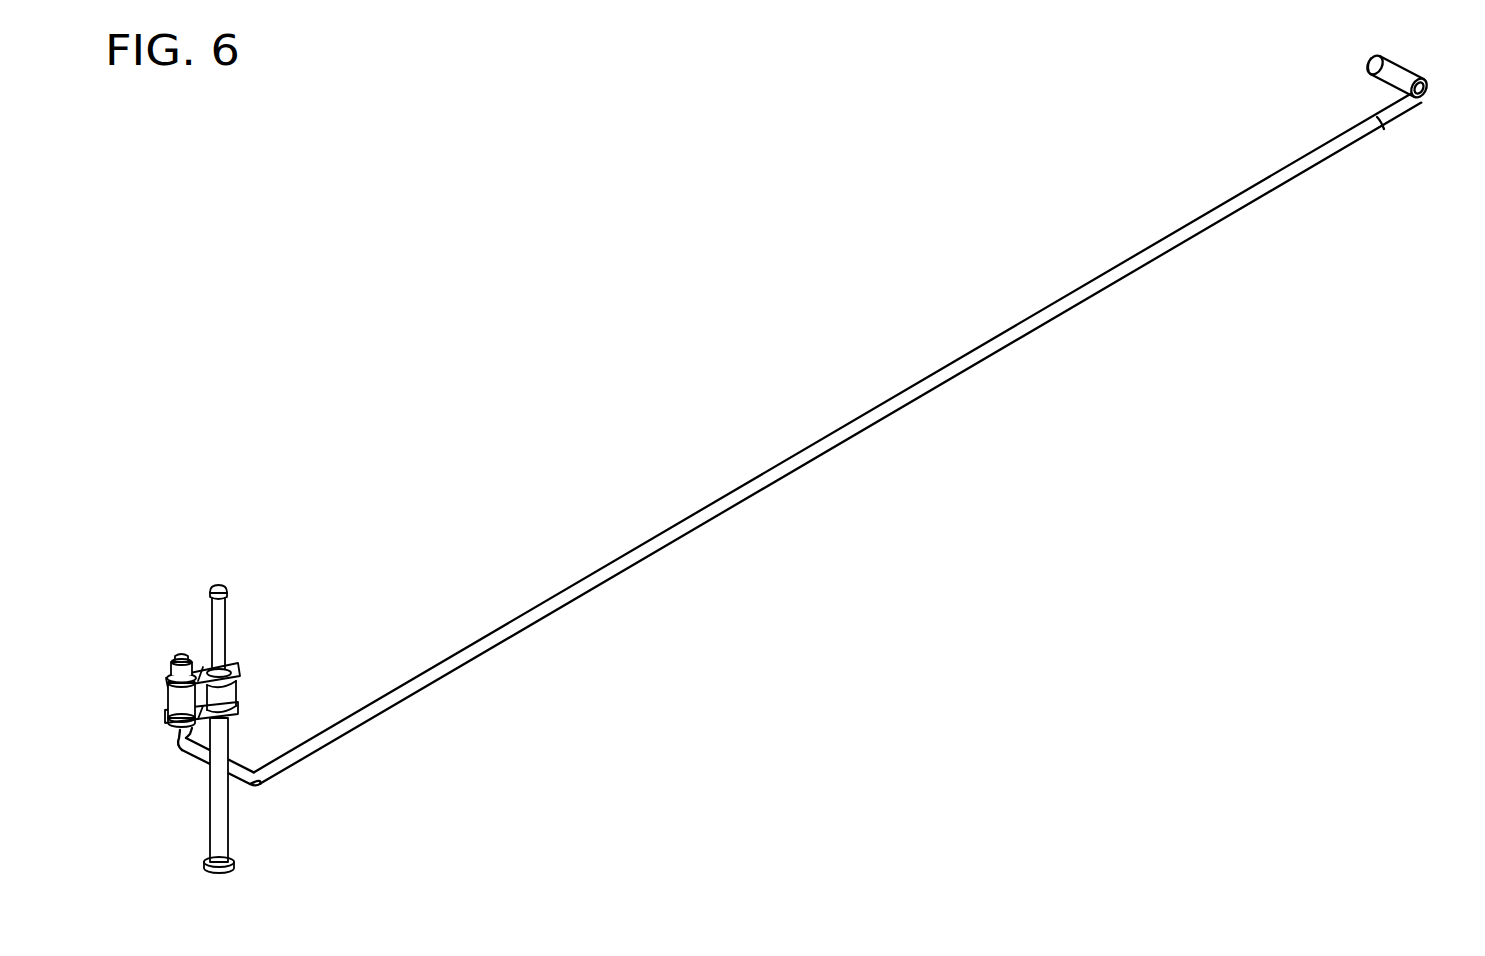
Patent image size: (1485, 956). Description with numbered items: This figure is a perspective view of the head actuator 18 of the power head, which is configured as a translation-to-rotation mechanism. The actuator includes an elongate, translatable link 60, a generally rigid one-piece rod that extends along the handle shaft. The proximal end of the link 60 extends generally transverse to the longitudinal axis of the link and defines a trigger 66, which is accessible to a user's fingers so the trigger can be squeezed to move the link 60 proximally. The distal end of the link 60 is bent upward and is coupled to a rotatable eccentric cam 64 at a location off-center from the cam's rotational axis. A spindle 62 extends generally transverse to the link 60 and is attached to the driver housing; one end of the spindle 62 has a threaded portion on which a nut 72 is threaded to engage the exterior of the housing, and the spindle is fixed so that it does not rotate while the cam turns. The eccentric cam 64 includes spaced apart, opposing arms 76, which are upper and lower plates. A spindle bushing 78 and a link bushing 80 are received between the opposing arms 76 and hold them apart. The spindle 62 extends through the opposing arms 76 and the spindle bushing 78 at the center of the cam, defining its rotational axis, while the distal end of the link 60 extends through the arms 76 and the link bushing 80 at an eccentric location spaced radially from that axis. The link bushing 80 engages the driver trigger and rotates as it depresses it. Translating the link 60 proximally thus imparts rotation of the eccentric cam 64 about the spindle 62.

The head actuator 18 is at (586, 204).
The link 60 is at (861, 428).
The trigger 66 is at (1393, 62).
The eccentric cam 64 is at (149, 669).
The spindle 62 is at (229, 620).
The nut 72 is at (224, 587).
The opposing arms 76 is at (236, 663).
The spindle bushing 78 is at (232, 696).
The link bushing 80 is at (168, 697).